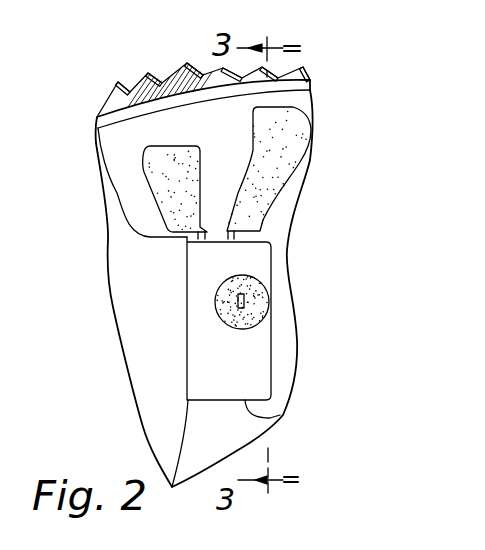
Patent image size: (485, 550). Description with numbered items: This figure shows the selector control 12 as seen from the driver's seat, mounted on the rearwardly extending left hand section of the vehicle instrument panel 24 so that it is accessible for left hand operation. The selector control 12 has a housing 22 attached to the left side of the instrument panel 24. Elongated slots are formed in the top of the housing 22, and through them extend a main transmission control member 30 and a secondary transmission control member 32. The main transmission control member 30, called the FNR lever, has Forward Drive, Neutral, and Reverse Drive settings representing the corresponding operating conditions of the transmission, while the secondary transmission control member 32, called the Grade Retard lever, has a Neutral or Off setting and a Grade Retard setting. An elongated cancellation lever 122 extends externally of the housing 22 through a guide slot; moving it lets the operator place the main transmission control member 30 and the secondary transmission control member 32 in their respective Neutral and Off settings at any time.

The selector control 12 is at (270, 315).
The housing 22 is at (280, 415).
The vehicle instrument panel 24 is at (122, 320).
The main transmission control member 30 is at (143, 165).
The secondary transmission control member 32 is at (310, 138).
The cancellation lever 122 is at (232, 329).